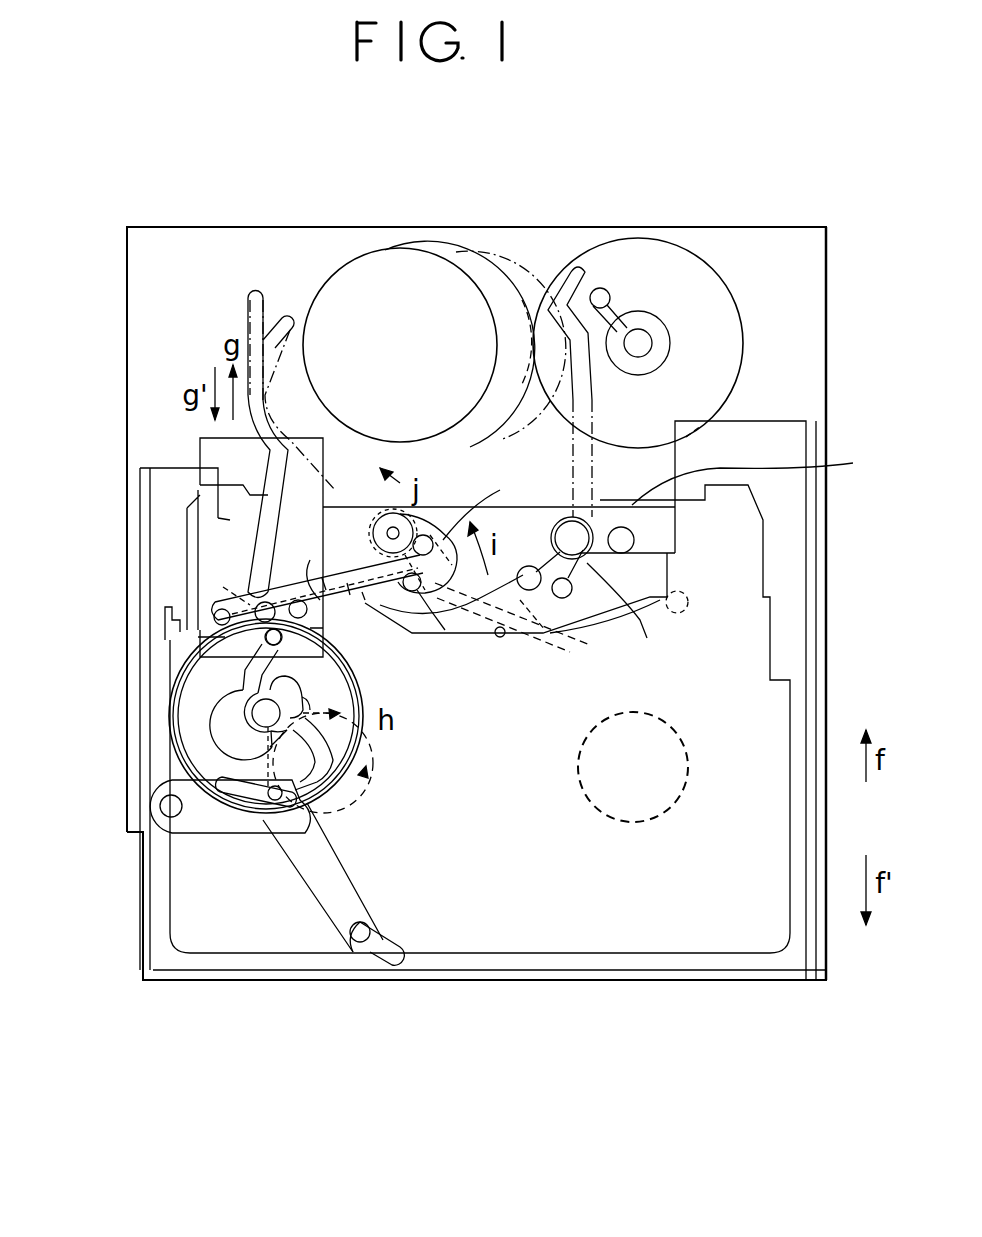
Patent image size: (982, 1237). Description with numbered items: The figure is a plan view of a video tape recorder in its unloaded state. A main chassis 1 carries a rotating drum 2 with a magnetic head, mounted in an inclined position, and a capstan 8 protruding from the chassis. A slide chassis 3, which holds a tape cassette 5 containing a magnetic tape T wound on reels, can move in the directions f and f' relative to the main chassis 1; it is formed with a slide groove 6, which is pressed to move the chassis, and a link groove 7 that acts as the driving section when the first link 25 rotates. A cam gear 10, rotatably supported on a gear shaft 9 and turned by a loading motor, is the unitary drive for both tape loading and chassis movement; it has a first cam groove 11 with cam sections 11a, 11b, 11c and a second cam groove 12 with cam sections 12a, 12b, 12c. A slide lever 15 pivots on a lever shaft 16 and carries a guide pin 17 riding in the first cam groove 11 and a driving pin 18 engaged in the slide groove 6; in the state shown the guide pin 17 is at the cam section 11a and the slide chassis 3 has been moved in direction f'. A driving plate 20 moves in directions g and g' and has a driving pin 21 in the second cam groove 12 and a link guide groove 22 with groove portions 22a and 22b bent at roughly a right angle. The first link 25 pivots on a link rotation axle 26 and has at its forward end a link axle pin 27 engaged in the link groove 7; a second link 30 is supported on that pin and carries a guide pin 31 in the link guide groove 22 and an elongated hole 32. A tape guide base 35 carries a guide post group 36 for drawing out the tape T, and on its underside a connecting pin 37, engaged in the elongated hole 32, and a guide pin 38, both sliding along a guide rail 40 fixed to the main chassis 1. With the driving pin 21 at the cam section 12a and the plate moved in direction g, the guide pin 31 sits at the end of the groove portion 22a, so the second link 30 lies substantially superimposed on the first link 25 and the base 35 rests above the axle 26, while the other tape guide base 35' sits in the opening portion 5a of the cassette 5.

The main chassis 1 is at (808, 303).
The rotating drum 2 is at (375, 268).
The slide chassis 3 is at (790, 557).
The tape cassette 5 is at (623, 935).
The opening portion 5a is at (507, 637).
The slide groove 6 is at (388, 965).
The link groove 7 is at (320, 600).
The capstan 8 is at (637, 340).
The gear shaft 9 is at (262, 745).
The cam gear 10 is at (193, 733).
The first cam groove 11 is at (335, 808).
The cam section 11a is at (290, 795).
The cam section 11b is at (355, 805).
The cam section 11c is at (350, 705).
The second cam groove 12 is at (237, 675).
The cam section 12a is at (330, 677).
The cam section 12b is at (237, 655).
The cam section 12c is at (233, 703).
The slide lever 15 is at (312, 870).
The lever shaft 16 is at (160, 806).
The guide pin 17 is at (263, 823).
The driving pin 18 is at (360, 942).
The driving plate 20 is at (210, 457).
The driving pin 21 is at (223, 640).
The link guide groove 22 is at (290, 572).
The groove portion 22a is at (223, 587).
The groove portion 22b is at (262, 523).
The first link 25 is at (362, 592).
The link rotation axle 26 is at (562, 600).
The link axle pin 27 is at (322, 578).
The second link 30 is at (347, 583).
The guide pin 31 is at (213, 603).
The elongated hole 32 is at (533, 630).
The tape guide base 35 is at (538, 432).
The other tape guide base 35' is at (638, 615).
The guide post group 36 is at (428, 528).
The connecting pin 37 is at (445, 630).
The guide pin 38 is at (395, 512).
The guide rail 40 is at (248, 293).
The magnetic tape T is at (853, 463).